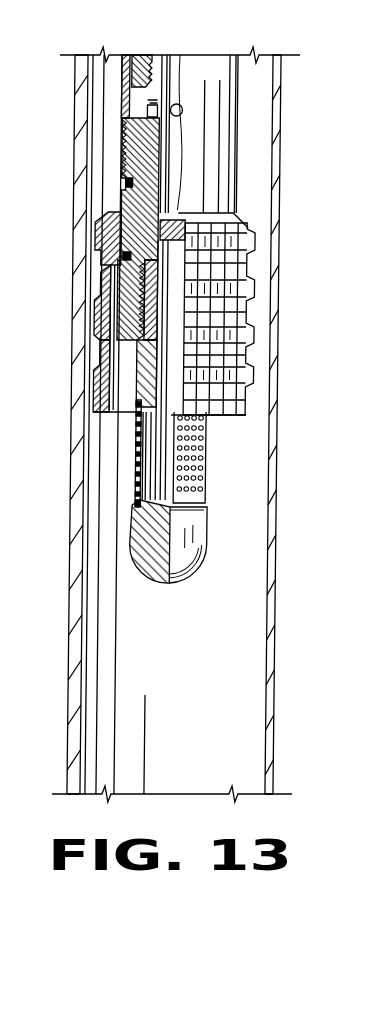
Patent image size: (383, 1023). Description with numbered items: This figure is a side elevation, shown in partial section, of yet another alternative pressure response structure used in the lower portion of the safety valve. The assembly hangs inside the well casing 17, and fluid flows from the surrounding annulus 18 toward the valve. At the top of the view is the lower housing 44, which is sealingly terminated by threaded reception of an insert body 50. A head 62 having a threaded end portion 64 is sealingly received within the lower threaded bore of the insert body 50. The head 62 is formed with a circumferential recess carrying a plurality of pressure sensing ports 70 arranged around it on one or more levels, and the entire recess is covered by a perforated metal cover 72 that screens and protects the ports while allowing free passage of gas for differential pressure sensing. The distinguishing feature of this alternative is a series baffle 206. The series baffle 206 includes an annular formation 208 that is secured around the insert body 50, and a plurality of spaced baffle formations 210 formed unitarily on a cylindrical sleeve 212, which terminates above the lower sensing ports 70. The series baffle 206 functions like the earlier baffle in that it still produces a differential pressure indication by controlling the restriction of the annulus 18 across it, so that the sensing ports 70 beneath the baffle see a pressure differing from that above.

The casing 17 is at (283, 139).
The annulus 18 is at (240, 656).
The lower housing 44 is at (122, 98).
The insert body 50 is at (133, 200).
The head 62 is at (160, 565).
The threaded end portion 64 is at (153, 293).
The pressure sensing ports 70 is at (135, 497).
The perforated metal cover 72 is at (140, 462).
The series baffle 206 is at (233, 418).
The annular formation 208 is at (110, 232).
The baffle formations 210 is at (260, 238).
The cylindrical sleeve 212 is at (105, 400).